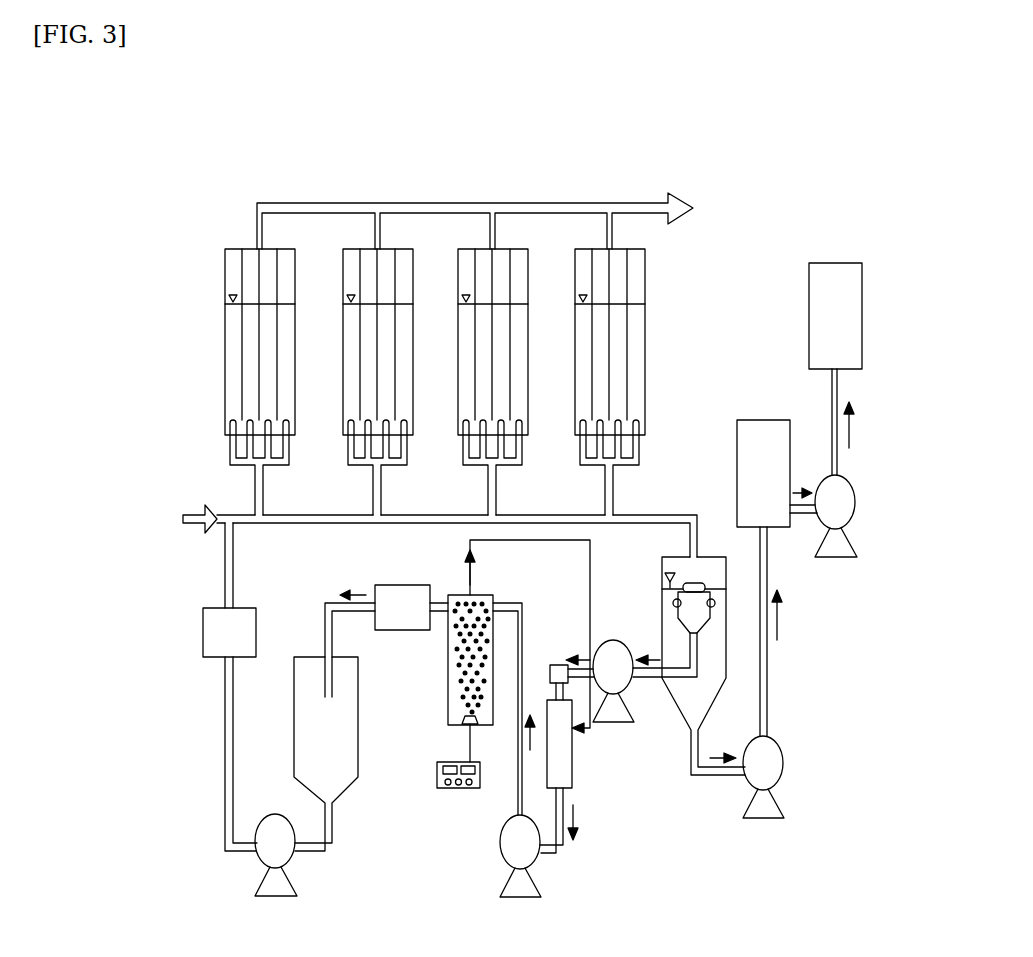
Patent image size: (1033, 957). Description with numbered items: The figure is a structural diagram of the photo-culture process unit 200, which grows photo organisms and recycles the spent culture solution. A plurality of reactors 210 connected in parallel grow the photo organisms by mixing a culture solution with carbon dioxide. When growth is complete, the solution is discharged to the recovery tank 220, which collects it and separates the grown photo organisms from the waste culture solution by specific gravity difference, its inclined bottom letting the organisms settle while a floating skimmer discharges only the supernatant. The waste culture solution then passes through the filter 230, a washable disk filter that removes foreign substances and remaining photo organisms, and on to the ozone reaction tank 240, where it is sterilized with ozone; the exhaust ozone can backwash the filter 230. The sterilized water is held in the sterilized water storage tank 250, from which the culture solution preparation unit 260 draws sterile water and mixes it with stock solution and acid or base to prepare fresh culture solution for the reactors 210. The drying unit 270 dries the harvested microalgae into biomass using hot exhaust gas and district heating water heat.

The photo-culture process unit 200 is at (210, 122).
The reactor 210 is at (232, 249).
The recovery tank 220 is at (680, 710).
The filter 230 is at (573, 779).
The ozone reaction tank 240 is at (448, 665).
The sterilized water storage tank 250 is at (346, 787).
The culture solution preparation unit 260 is at (203, 633).
The drying unit 270 is at (835, 262).